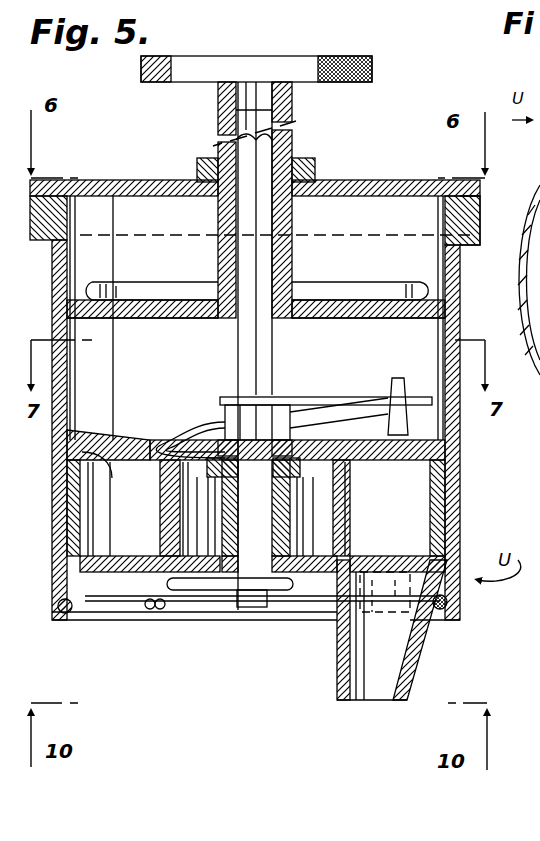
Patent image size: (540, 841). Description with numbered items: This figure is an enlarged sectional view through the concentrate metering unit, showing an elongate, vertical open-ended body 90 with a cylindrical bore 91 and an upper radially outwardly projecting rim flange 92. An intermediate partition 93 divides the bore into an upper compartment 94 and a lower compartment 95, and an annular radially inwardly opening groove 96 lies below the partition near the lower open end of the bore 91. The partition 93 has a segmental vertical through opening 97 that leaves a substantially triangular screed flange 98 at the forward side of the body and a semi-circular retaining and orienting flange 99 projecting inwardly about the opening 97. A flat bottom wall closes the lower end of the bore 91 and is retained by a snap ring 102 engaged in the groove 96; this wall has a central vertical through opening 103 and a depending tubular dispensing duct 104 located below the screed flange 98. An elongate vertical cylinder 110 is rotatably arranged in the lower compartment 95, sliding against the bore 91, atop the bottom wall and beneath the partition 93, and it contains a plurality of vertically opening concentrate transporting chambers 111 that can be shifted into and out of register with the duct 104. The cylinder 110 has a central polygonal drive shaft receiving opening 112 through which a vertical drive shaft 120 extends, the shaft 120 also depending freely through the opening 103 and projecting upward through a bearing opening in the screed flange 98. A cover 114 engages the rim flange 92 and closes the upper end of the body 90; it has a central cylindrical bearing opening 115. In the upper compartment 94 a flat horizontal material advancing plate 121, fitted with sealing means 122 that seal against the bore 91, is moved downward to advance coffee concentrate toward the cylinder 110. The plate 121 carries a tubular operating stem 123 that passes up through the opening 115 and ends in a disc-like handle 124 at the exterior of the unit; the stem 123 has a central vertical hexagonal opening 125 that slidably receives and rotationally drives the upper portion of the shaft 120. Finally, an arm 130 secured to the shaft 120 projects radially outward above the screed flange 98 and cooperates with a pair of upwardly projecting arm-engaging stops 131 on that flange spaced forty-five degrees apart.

The disc-like handle 124 is at (296, 55).
The operating stem 123 is at (292, 97).
The bearing opening 115 is at (292, 135).
The cover 114 is at (406, 152).
The central vertical opening 125 is at (228, 223).
The material advancing plate 121 is at (184, 300).
The sealing means 122 is at (430, 294).
The drive shaft 120 is at (292, 254).
The rim flange 92 is at (462, 222).
The cylindrical bore 91 is at (447, 272).
The body 90 is at (460, 316).
The upper compartment 94 is at (256, 335).
The arm 130 is at (300, 390).
The arm-engaging stops 131 is at (196, 422).
The segmental vertical through opening 97 is at (140, 440).
The partition 93 is at (456, 449).
The screed flange 98 is at (392, 455).
The lower compartment 95 is at (67, 509).
The retaining and orienting flange 99 is at (106, 477).
The snap ring 102 is at (262, 626).
The cylinder 110 is at (160, 560).
The concentrate receiving and transporting chambers 111 is at (138, 545).
The drive shaft receiving opening 112 is at (240, 556).
The central vertical through opening 103 is at (323, 607).
The annular groove 96 is at (440, 608).
The tubular dispensing duct 104 is at (420, 672).